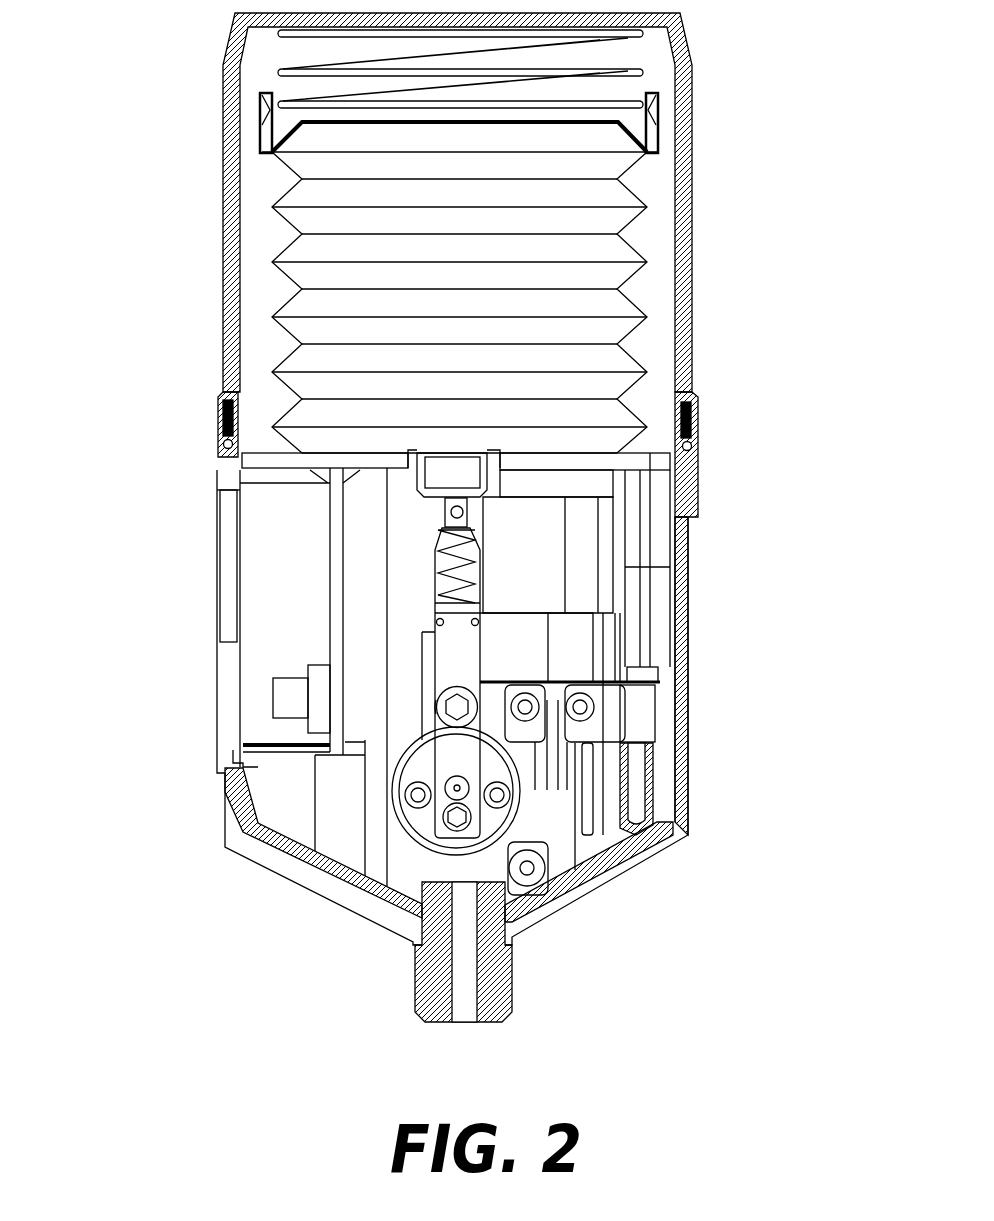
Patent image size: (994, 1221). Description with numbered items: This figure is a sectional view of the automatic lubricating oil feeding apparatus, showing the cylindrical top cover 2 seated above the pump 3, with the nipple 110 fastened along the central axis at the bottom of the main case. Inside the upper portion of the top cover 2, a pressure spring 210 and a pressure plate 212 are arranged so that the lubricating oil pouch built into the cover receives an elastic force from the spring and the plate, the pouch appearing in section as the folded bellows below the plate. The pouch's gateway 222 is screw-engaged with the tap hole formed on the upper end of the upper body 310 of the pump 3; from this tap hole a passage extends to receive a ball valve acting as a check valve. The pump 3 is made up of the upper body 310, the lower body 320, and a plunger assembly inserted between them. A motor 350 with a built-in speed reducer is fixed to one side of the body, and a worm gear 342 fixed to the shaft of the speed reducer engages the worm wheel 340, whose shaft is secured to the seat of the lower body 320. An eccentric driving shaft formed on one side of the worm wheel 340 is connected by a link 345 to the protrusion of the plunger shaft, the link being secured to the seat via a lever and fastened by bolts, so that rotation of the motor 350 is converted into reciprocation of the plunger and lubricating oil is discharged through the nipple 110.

The top cover 2 is at (712, 258).
The pressure spring 210 is at (615, 72).
The pressure plate 212 is at (650, 118).
The gateway 222 is at (440, 470).
The pump 3 is at (368, 566).
The upper body 310 is at (400, 510).
The lower body 320 is at (405, 688).
The motor 350 is at (610, 573).
The worm gear 342 is at (585, 790).
The link 345 is at (503, 775).
The worm wheel 340 is at (425, 850).
The nipple 110 is at (495, 983).